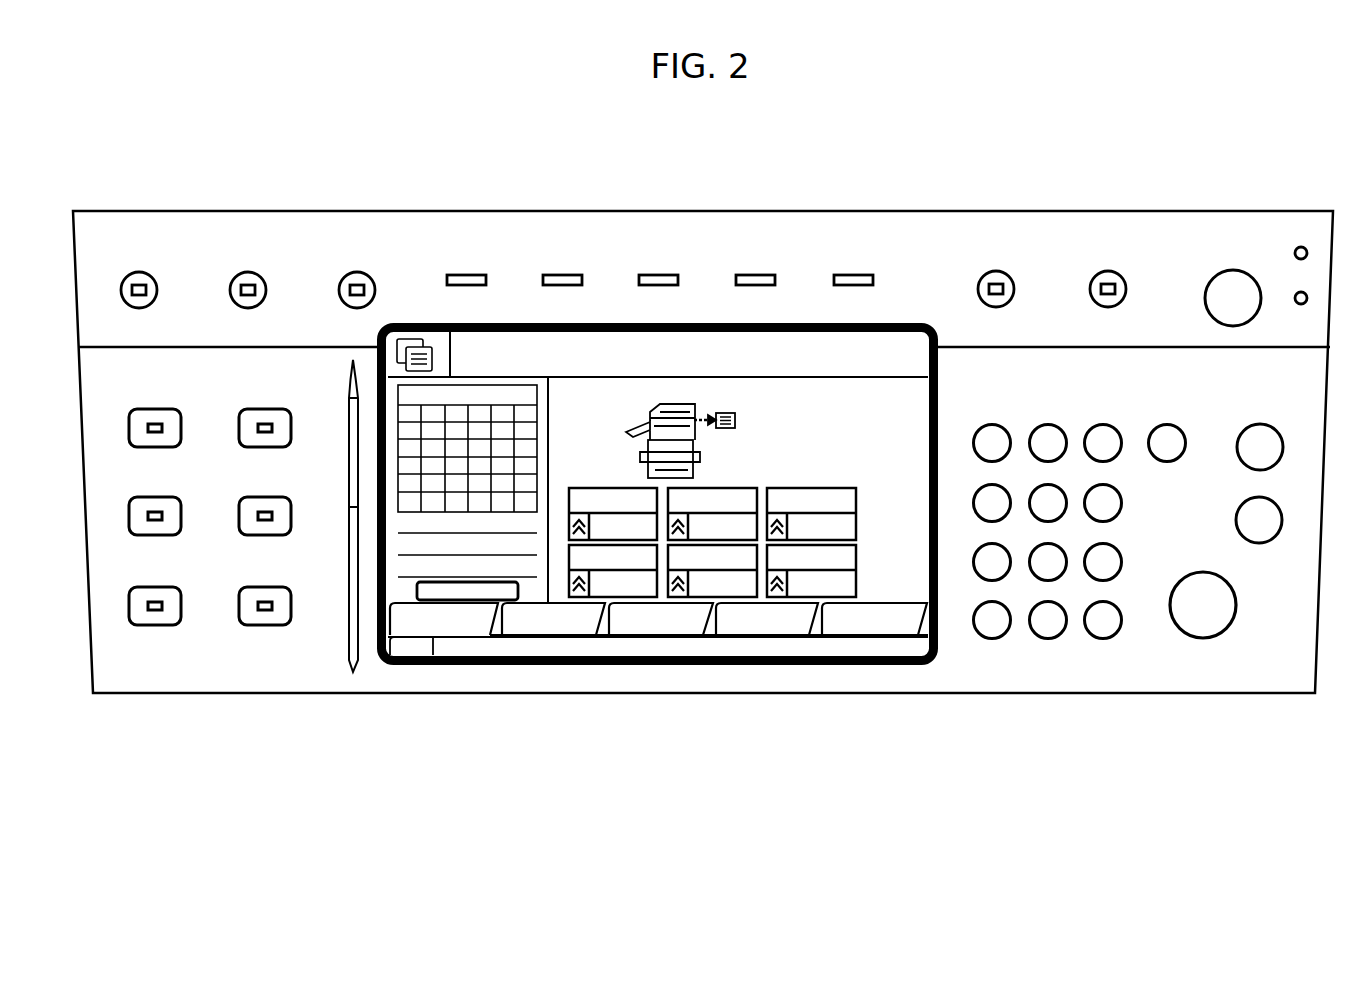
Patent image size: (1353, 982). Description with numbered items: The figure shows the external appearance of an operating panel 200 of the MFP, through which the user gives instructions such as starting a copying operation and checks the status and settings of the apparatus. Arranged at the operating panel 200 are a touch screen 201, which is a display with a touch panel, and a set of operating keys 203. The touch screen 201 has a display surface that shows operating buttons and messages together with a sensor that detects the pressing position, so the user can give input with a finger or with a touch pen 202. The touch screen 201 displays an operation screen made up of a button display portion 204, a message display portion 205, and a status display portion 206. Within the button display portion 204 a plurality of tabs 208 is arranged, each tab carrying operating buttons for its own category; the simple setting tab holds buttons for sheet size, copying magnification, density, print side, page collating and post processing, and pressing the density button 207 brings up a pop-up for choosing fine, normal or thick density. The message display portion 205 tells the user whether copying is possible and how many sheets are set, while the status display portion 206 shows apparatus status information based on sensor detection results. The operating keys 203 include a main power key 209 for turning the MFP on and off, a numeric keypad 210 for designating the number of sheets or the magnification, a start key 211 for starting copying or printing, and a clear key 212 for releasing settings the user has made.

The operating panel 200 is at (962, 174).
The touch screen 201 is at (678, 461).
The touch pen 202 is at (353, 670).
The operating keys 203 is at (698, 611).
The button display portion 204 is at (658, 687).
The message display portion 205 is at (790, 340).
The status display portion 206 is at (448, 652).
The density button 207 is at (850, 533).
The tabs 208 is at (692, 630).
The main power key 209 is at (1250, 297).
The numeric keypad 210 is at (1061, 672).
The start key 211 is at (1227, 675).
The clear key 212 is at (1167, 460).